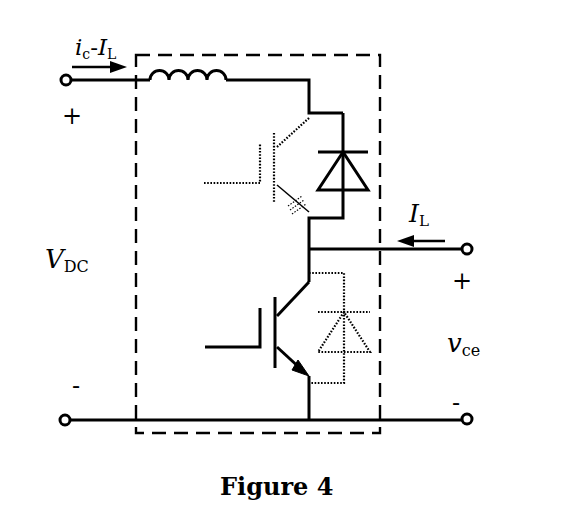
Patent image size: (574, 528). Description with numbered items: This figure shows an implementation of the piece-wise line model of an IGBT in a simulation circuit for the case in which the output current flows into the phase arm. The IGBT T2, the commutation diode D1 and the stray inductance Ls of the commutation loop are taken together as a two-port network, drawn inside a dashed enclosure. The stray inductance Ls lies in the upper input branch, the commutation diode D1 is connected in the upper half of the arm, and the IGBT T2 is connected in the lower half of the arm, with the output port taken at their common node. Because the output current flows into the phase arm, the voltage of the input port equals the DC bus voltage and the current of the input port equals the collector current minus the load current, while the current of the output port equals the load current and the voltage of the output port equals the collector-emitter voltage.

The stray inductance Ls is at (188, 92).
The commutation diode D1 is at (286, 166).
The IGBT T2 is at (287, 328).